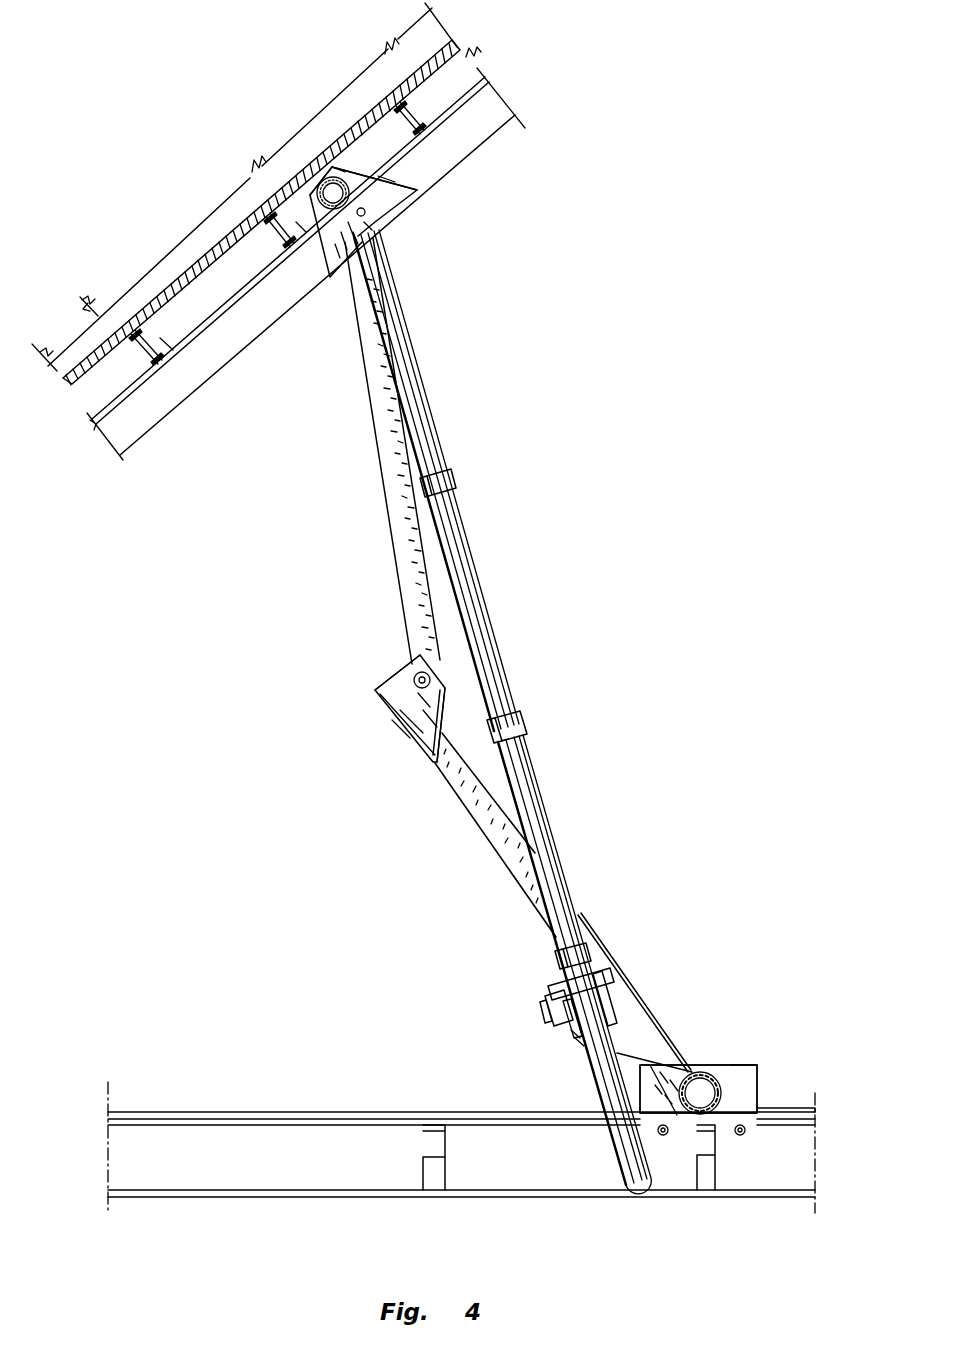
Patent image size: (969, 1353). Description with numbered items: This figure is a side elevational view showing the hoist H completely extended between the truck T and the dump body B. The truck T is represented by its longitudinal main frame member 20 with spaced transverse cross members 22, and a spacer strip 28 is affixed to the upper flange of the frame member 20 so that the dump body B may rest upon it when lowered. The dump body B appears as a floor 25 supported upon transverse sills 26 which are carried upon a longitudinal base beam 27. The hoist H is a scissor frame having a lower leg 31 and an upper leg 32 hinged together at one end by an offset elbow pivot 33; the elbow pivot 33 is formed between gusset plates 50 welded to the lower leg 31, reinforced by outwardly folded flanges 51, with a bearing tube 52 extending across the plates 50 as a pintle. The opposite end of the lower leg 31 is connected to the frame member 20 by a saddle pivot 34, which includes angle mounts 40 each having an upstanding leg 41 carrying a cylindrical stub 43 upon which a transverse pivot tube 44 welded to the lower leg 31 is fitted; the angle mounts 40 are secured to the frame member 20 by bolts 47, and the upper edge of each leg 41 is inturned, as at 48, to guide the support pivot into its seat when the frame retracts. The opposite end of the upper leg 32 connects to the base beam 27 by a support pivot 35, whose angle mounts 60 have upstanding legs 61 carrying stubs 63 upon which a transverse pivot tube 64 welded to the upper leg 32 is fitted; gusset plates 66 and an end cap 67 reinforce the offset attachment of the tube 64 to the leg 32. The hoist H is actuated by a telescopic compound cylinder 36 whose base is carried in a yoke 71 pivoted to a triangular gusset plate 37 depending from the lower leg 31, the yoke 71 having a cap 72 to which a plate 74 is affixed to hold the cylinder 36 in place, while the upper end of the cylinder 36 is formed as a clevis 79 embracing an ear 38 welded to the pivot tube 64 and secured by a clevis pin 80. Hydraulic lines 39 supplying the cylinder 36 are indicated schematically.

The longitudinal main frame members 20 is at (256, 1178).
The transverse cross members 22 is at (428, 1168).
The floor 25 is at (222, 244).
The transverse sills 26 is at (152, 338).
The longitudinal base beams 27 is at (228, 346).
The spacer strips 28 is at (172, 1112).
The lower leg 31 is at (497, 843).
The upper leg 32 is at (368, 404).
The elbow pivot 33 is at (372, 702).
The saddle pivot 34 is at (713, 1060).
The support pivot 35 is at (373, 136).
The telescopic compound cylinders 36 is at (452, 522).
The gusset plate 37 is at (628, 1012).
The ear 38 is at (330, 220).
The hydraulic lines 39 is at (550, 988).
The angle mounts 40 is at (757, 1080).
The upstanding leg 41 is at (757, 1102).
The cylindrical stub 43 is at (702, 1072).
The transverse pivot tube 44 is at (722, 1070).
The bolts 47 is at (746, 1130).
The inturned upper edge 48 is at (758, 1065).
The gusset plates 50 is at (416, 716).
The flanges 51 is at (392, 682).
The bearing tube 52 is at (415, 672).
The angle mounts 60 is at (420, 200).
The upstanding leg 61 is at (418, 191).
The cylindrical stub 63 is at (312, 190).
The transverse pivot tube 64 is at (352, 165).
The gusset plates 66 is at (322, 232).
The end cap 67 is at (396, 180).
The yoke 71 is at (576, 1035).
The cap 72 is at (572, 1015).
The plate 74 is at (602, 976).
The clevis 79 is at (384, 232).
The clevis pin 80 is at (368, 214).
The dump body B is at (232, 146).
The hoist H is at (550, 565).
The truck T is at (215, 1097).